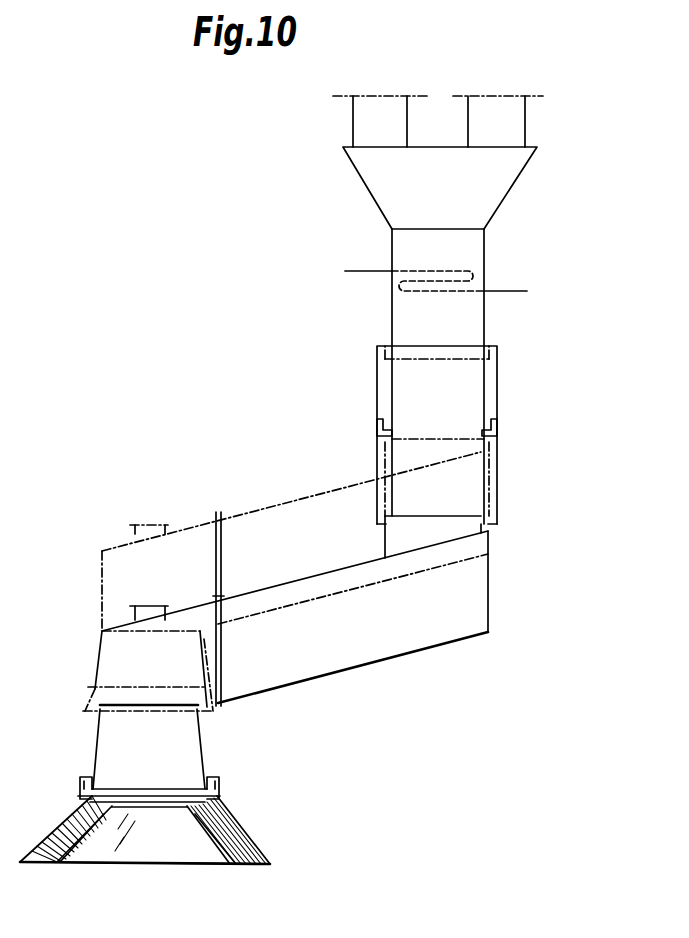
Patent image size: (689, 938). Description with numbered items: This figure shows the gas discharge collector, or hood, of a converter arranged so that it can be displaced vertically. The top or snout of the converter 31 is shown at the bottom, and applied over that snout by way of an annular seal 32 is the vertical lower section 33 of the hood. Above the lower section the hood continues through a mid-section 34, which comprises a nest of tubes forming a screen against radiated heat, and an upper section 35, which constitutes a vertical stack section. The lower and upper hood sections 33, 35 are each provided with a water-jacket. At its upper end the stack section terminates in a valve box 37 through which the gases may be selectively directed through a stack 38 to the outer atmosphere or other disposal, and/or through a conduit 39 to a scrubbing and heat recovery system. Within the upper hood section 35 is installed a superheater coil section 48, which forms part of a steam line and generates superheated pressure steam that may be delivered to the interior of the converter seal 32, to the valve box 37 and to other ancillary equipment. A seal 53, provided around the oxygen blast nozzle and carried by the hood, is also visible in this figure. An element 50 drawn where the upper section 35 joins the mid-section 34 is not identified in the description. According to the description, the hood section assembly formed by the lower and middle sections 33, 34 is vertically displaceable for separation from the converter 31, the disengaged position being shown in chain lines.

The converter 31 is at (58, 865).
The annular seal 32 is at (220, 792).
The lower hood section 33 is at (192, 747).
The middle hood section 34 is at (427, 640).
The upper hood section 35 is at (475, 329).
The valve box 37 is at (497, 188).
The stack 38 is at (357, 115).
The conduit 39 is at (510, 119).
The superheater coil section 48 is at (440, 272).
The sleeve 50 is at (497, 432).
The seal 53 is at (140, 617).